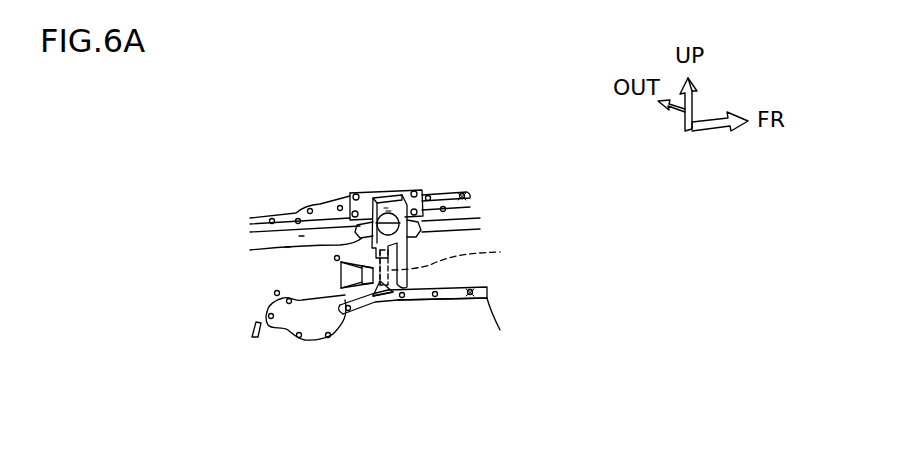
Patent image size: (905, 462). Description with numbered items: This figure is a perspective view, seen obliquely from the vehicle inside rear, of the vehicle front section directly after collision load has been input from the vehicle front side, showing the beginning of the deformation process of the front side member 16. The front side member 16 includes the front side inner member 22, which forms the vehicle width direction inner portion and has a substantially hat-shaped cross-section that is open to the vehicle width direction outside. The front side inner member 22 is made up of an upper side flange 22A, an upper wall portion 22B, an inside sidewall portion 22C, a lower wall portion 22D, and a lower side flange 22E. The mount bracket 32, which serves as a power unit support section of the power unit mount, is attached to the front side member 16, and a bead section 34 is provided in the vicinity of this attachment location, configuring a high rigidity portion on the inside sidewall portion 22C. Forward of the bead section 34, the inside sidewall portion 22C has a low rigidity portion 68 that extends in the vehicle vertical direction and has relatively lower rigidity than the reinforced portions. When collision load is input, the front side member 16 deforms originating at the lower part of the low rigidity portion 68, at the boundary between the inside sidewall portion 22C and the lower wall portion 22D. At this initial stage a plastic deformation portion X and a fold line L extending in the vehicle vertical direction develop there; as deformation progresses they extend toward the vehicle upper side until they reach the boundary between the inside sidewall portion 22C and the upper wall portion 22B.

The front side inner member 22 is at (568, 253).
The front side member 16 is at (306, 244).
The upper side flange 22A is at (463, 200).
The upper wall portion 22B is at (485, 232).
The inside sidewall portion 22C is at (470, 273).
The lower wall portion 22D is at (483, 295).
The lower side flange 22E is at (450, 298).
The mount bracket 32 is at (393, 190).
The bead section 34 is at (338, 265).
The low rigidity portion 68 is at (457, 264).
The fold line L is at (387, 300).
The plastic deformation portion X is at (370, 300).